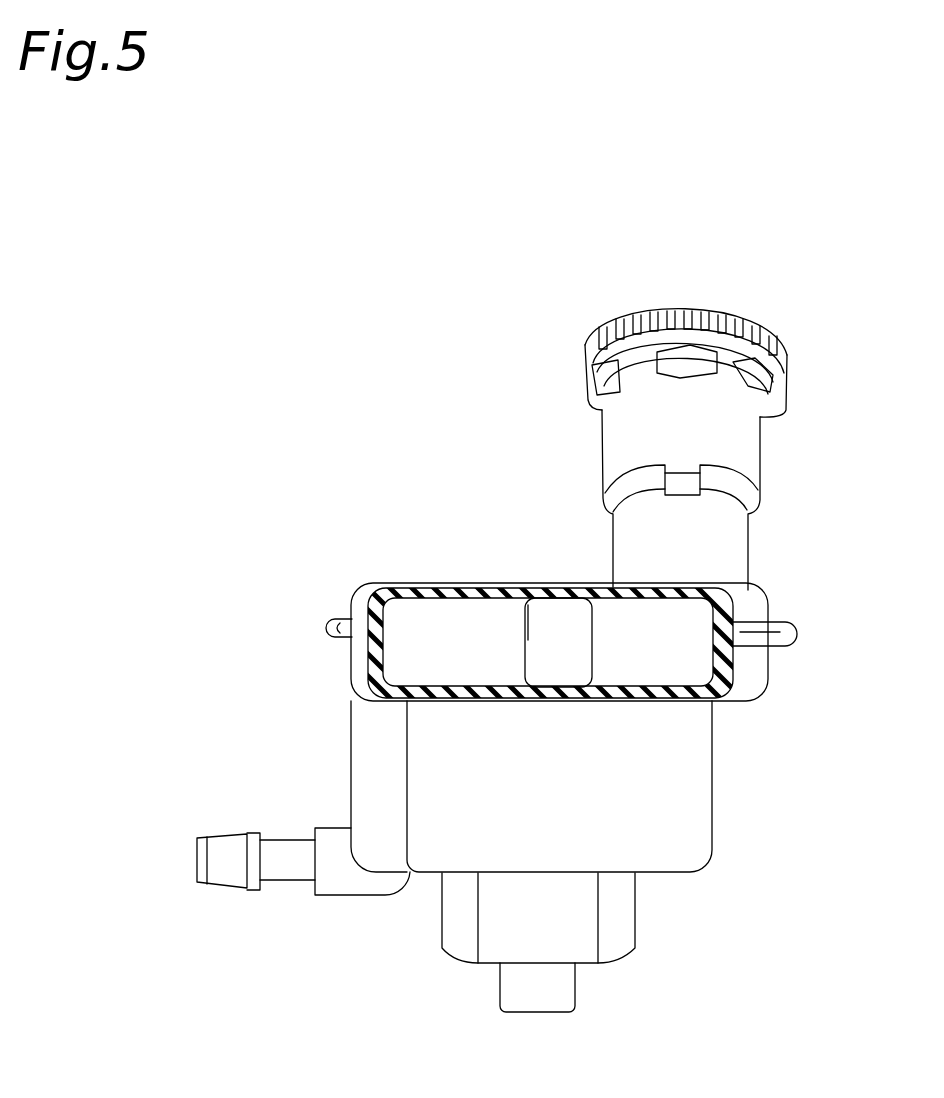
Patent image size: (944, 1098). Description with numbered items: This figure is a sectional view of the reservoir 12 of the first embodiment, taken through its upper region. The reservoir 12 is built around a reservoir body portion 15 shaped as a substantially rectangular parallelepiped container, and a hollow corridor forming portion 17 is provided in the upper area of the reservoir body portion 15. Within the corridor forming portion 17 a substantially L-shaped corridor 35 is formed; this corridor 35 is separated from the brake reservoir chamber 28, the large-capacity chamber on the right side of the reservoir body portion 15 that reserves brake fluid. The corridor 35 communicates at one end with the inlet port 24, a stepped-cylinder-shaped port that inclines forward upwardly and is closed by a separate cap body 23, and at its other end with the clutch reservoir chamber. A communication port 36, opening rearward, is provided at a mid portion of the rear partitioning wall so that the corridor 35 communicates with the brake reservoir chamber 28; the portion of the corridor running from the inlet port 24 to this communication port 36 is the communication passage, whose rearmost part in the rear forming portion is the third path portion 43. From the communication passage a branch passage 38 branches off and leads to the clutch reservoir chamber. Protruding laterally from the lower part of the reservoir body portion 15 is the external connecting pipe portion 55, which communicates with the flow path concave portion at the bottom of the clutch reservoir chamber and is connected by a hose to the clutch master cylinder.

The reservoir 12 is at (782, 607).
The reservoir body portion 15 is at (712, 808).
The corridor forming portion 17 is at (768, 680).
The cap body 23 is at (687, 307).
The inlet port 24 is at (752, 446).
The brake reservoir chamber 28 is at (563, 630).
The corridor 35 is at (685, 625).
The communication port 36 is at (526, 646).
The branch passage 38 is at (460, 628).
The third path portion 43 is at (680, 664).
The external connecting pipe portion 55 is at (228, 845).